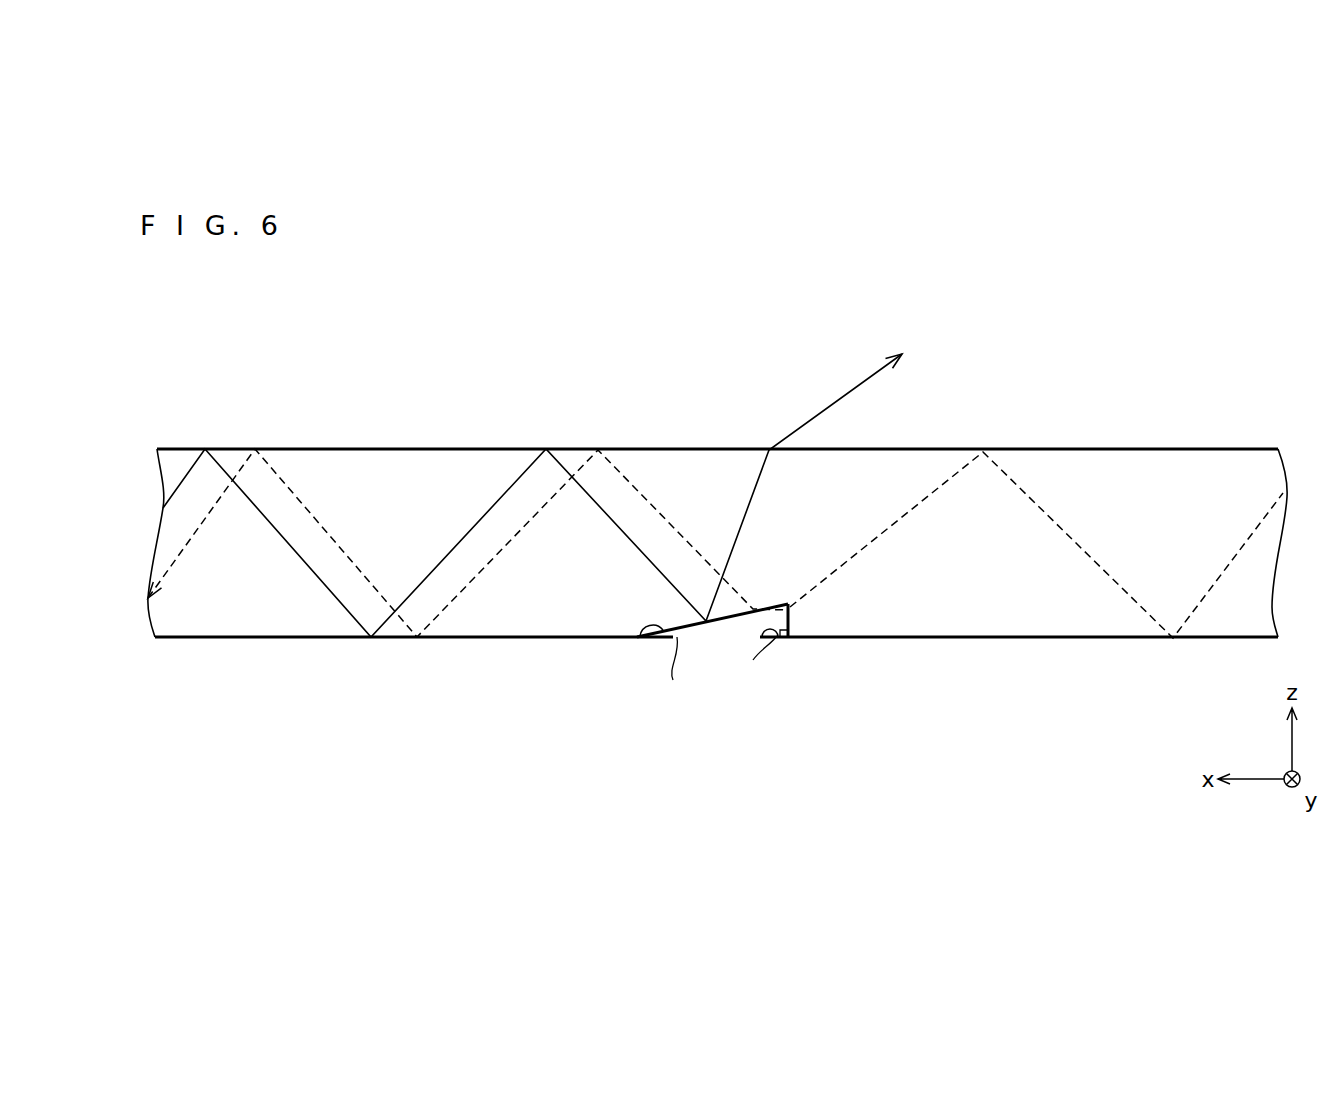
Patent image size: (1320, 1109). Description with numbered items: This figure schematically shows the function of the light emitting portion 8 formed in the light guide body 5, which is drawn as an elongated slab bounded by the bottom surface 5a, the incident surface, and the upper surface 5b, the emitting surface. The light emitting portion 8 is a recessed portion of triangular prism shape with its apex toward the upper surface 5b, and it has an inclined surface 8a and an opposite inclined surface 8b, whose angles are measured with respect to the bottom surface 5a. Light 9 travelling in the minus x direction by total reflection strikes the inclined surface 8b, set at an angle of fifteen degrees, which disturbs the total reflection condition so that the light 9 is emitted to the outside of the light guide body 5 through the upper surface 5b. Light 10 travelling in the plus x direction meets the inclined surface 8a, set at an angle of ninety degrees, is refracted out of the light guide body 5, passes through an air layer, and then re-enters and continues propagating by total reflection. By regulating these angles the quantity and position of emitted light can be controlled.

The light guide body 5 is at (1052, 450).
The bottom surface 5a is at (193, 637).
The upper surface 5b is at (182, 449).
The light emitting portion 8 is at (713, 664).
The inclined surface 8a is at (790, 640).
The inclined surface 8b is at (640, 637).
The light 9 is at (837, 398).
The light 10 is at (288, 480).